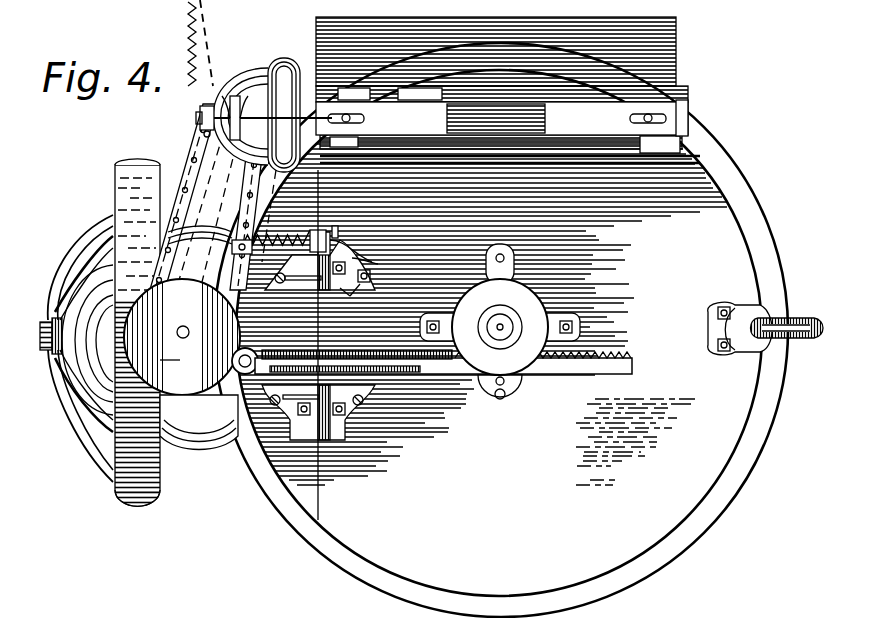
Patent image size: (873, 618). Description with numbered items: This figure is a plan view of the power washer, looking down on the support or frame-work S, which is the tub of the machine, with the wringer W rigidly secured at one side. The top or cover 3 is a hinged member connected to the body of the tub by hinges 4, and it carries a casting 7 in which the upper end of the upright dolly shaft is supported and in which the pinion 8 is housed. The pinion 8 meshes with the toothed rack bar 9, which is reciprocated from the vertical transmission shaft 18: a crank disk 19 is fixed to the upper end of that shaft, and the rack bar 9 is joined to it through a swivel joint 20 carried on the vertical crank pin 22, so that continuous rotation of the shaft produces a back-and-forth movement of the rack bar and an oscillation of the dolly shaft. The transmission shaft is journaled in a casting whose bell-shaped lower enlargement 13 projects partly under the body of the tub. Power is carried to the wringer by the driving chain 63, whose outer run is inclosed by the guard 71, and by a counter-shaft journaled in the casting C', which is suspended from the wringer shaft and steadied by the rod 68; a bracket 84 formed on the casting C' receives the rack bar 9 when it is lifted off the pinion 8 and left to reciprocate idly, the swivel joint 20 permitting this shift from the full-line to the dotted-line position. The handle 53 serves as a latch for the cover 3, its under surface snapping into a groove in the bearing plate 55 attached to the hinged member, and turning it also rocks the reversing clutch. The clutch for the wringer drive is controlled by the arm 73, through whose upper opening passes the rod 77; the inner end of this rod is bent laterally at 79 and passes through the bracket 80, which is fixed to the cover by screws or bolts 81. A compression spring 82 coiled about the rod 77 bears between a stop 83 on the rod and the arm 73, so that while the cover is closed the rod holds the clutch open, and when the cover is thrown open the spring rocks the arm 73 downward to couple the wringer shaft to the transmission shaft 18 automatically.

The support or frame-work S is at (268, 507).
The top or cover 3 is at (481, 343).
The wringer W is at (612, 122).
The bearing plate 55 is at (738, 310).
The handle 53 is at (790, 310).
The guard 71 is at (166, 228).
The driving chain 63 is at (190, 198).
The rod 68 is at (244, 185).
The toothed rack bar 9 is at (190, 28).
The casting C' is at (266, 100).
The bracket 84 is at (206, 108).
The vertical transmission shaft 18 is at (182, 326).
The crank disk 19 is at (160, 353).
The lower enlargement 13 is at (199, 422).
The vertical crank pin 22 is at (236, 356).
The pinion 8 is at (548, 362).
The swivel joint 20 is at (238, 372).
The casting 7 is at (500, 316).
The hinges 4 is at (312, 268).
The compression spring 82 is at (278, 236).
The stop 83 is at (320, 232).
The laterally bent end 79 is at (338, 230).
The bracket 80 is at (362, 247).
The rod 77 is at (372, 264).
The screws or bolts 81 is at (350, 301).
The arm 73 is at (228, 256).